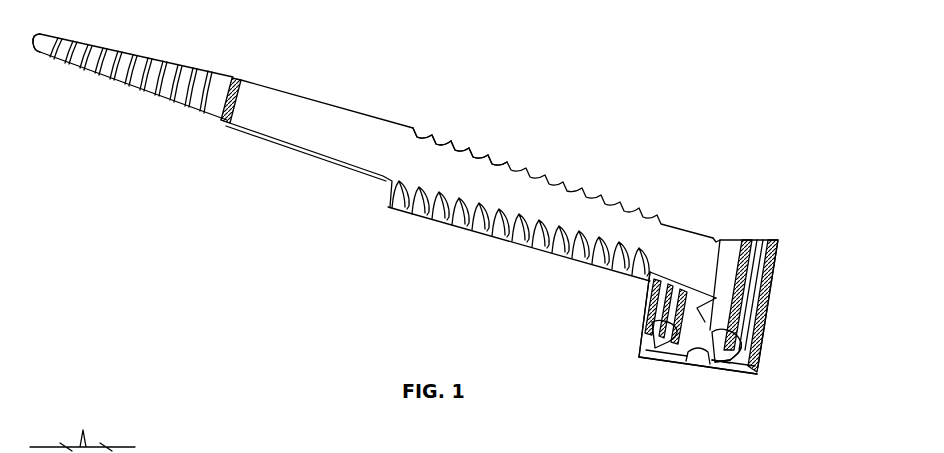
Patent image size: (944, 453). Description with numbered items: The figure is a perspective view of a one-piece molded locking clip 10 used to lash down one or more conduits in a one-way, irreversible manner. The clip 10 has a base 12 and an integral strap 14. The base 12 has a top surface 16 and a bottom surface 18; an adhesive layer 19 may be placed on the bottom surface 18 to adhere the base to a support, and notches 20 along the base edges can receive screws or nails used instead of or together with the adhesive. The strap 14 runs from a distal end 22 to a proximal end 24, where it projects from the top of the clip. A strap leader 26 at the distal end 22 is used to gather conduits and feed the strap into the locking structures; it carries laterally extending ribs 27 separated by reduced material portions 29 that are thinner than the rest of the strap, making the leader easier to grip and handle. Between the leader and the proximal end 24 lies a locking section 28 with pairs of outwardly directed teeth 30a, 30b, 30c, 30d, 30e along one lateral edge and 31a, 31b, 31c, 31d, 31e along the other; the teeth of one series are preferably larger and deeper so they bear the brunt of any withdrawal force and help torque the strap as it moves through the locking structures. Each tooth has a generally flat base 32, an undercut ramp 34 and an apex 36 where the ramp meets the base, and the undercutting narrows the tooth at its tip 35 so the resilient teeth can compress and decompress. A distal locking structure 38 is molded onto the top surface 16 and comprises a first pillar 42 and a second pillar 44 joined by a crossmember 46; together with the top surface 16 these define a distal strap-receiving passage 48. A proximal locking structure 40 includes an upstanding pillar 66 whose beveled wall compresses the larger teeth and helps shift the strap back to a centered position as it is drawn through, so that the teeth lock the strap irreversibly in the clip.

The locking clip 10 is at (591, 93).
The base 12 is at (738, 358).
The strap 14 is at (587, 223).
The top surface 16 is at (655, 350).
The bottom surface 18 is at (721, 372).
The adhesive layer 19 is at (782, 268).
The notches 20 is at (721, 232).
The distal end 22 is at (63, 79).
The proximal end 24 is at (738, 260).
The strap leader 26 is at (130, 50).
The ribs 27 is at (83, 47).
The locking section 28 is at (502, 229).
The reduced material portions 29 is at (127, 78).
The strap tooth 30a is at (387, 208).
The strap tooth 30b is at (406, 214).
The strap tooth 30c is at (426, 221).
The strap tooth 30d is at (446, 228).
The strap tooth 30e is at (463, 238).
The strap tooth 31a is at (418, 124).
The strap tooth 31b is at (437, 125).
The strap tooth 31c is at (455, 134).
The strap tooth 31d is at (474, 137).
The strap tooth 31e is at (494, 136).
The flat base 32 is at (579, 250).
The ramp 34 is at (562, 252).
The tooth tip 35 is at (500, 233).
The apex 36 is at (571, 252).
The distal locking structure 38 is at (648, 315).
The proximal locking structure 40 is at (725, 352).
The first pillar 42 is at (687, 338).
The second pillar 44 is at (712, 237).
The crossmember 46 is at (661, 300).
The distal strap-receiving passage 48 is at (699, 309).
The pillar 66 is at (746, 346).